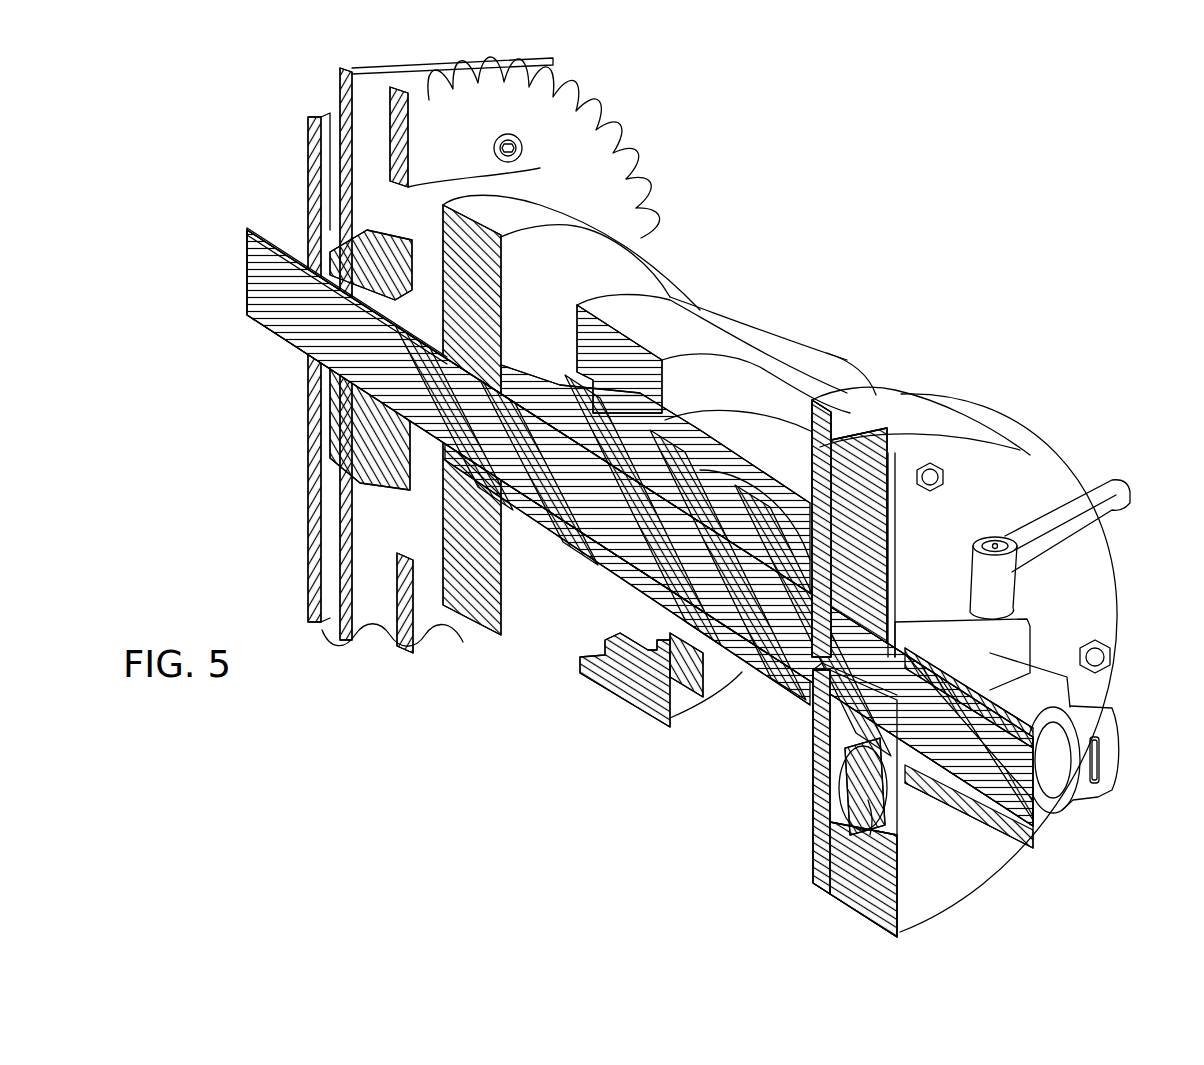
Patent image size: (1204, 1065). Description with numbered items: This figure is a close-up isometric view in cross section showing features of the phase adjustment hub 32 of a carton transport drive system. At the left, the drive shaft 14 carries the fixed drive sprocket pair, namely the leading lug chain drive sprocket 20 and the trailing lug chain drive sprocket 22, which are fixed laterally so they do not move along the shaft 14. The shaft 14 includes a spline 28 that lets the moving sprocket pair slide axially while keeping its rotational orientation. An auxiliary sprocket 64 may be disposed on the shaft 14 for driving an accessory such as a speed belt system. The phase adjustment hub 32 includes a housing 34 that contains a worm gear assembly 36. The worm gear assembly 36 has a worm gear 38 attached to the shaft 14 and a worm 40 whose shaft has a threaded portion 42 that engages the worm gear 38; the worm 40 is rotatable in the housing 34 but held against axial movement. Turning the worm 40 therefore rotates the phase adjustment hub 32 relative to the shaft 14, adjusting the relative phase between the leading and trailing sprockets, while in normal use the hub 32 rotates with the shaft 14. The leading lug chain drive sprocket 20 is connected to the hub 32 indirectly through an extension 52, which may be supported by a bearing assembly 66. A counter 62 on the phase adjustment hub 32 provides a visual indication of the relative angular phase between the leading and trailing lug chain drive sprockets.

The drive shaft 14 is at (263, 318).
The leading lug chain drive sprocket 20 is at (306, 131).
The trailing lug chain drive sprocket 22 is at (338, 80).
The spline 28 is at (260, 232).
The phase adjustment hub 32 is at (993, 404).
The housing 34 is at (930, 404).
The worm gear assembly 36 is at (805, 755).
The worm gear 38 is at (863, 748).
The worm 40 is at (845, 795).
The threaded portion 42 is at (876, 818).
The extension 52 is at (632, 265).
The counter 62 is at (1120, 748).
The auxiliary sprocket 64 is at (643, 196).
The bearing assembly 66 is at (698, 334).